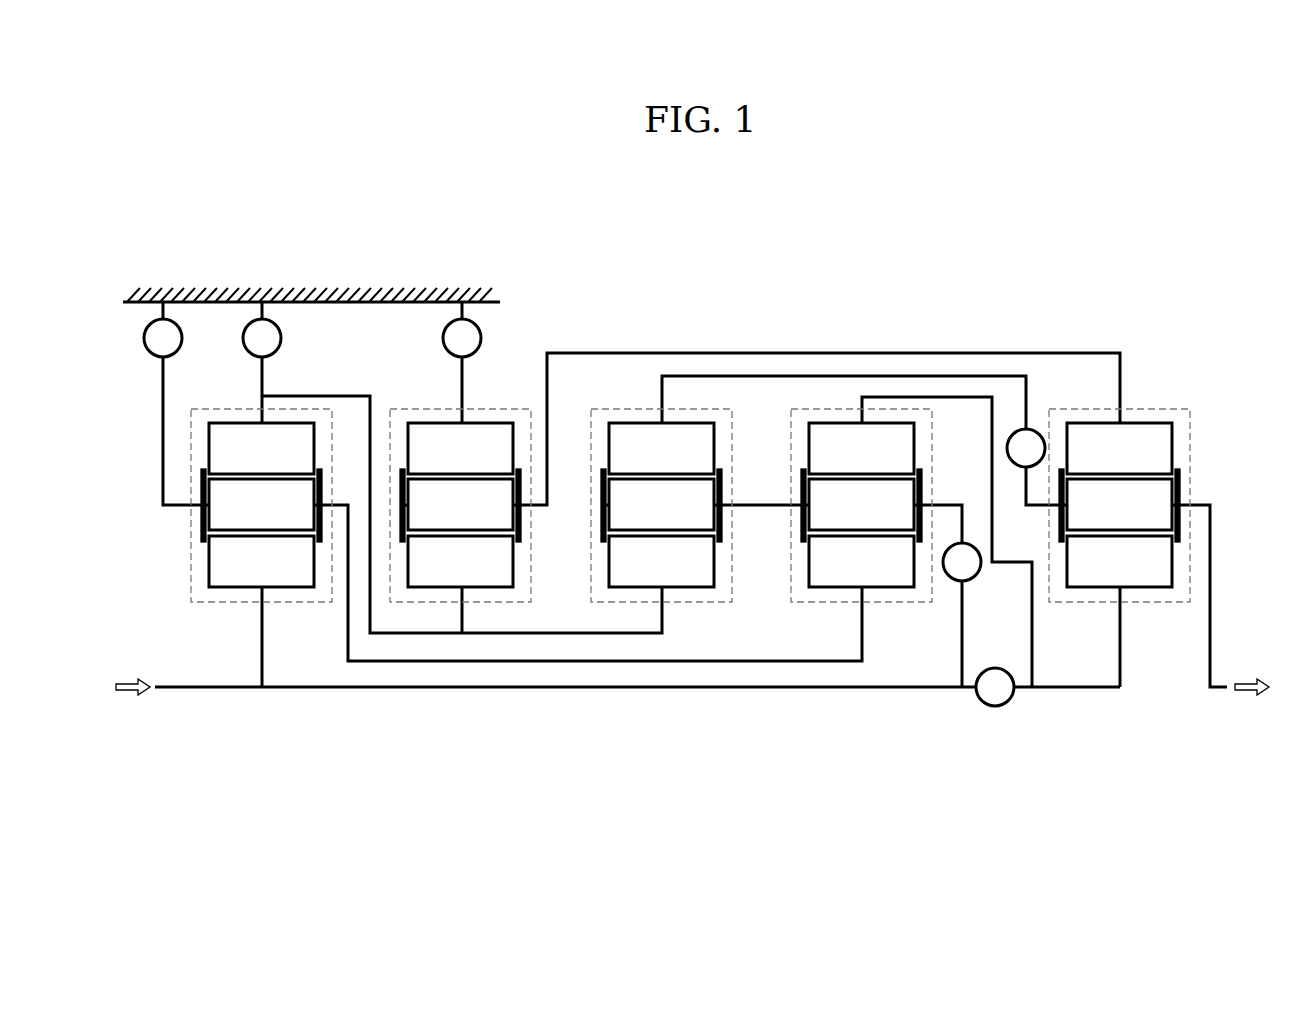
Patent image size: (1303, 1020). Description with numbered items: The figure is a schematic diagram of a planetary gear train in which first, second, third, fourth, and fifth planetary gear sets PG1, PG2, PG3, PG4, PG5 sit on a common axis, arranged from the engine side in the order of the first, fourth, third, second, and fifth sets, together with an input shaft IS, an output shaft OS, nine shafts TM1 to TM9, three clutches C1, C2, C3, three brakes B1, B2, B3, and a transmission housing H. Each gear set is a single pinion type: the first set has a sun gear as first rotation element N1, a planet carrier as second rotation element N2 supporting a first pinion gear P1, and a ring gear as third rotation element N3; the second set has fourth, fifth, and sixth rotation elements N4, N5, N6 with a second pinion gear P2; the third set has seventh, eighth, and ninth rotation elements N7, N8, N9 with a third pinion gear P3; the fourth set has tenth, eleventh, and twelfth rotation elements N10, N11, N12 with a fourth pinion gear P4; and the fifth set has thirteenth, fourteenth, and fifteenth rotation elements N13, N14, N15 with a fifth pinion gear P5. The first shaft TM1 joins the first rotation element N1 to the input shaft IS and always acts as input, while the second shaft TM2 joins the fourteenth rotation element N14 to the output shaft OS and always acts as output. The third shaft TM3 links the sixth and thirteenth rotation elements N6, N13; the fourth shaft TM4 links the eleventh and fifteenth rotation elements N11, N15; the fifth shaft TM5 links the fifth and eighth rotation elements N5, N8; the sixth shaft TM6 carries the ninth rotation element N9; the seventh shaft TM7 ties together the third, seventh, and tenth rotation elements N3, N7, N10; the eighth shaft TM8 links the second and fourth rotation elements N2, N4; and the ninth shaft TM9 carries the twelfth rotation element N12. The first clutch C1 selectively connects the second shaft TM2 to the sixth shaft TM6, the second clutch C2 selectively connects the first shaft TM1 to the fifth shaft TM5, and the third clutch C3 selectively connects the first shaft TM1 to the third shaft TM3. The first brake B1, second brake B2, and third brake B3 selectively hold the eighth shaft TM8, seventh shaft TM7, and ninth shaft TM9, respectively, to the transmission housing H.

The transmission housing H is at (332, 300).
The first brake B1 is at (173, 403).
The second brake B2 is at (262, 362).
The third brake B3 is at (462, 329).
The first clutch C1 is at (1026, 448).
The second clutch C2 is at (949, 596).
The third clutch C3 is at (1048, 646).
The first planetary gear set PG1 is at (232, 580).
The second planetary gear set PG2 is at (889, 580).
The third planetary gear set PG3 is at (689, 580).
The fourth planetary gear set PG4 is at (488, 581).
The fifth planetary gear set PG5 is at (1160, 582).
The first rotation element N1 is at (261, 561).
The second rotation element N2 is at (203, 525).
The third rotation element N3 is at (261, 448).
The fourth rotation element N4 is at (861, 561).
The fifth rotation element N5 is at (894, 474).
The sixth rotation element N6 is at (861, 448).
The seventh rotation element N7 is at (661, 561).
The eighth rotation element N8 is at (694, 474).
The ninth rotation element N9 is at (661, 448).
The tenth rotation element N10 is at (460, 561).
The eleventh rotation element N11 is at (523, 523).
The twelfth rotation element N12 is at (460, 448).
The thirteenth rotation element N13 is at (1119, 561).
The fourteenth rotation element N14 is at (1180, 483).
The fifteenth rotation element N15 is at (1119, 448).
The first pinion gear P1 is at (261, 504).
The second pinion gear P2 is at (861, 504).
The third pinion gear P3 is at (661, 504).
The fourth pinion gear P4 is at (460, 504).
The fifth pinion gear P5 is at (1119, 504).
The first shaft TM1 is at (539, 690).
The second shaft TM2 is at (1208, 655).
The third shaft TM3 is at (1034, 635).
The fourth shaft TM4 is at (683, 352).
The fifth shaft TM5 is at (758, 507).
The sixth shaft TM6 is at (764, 375).
The seventh shaft TM7 is at (403, 636).
The eighth shaft TM8 is at (618, 663).
The ninth shaft TM9 is at (464, 387).
The input shaft IS is at (174, 690).
The output shaft OS is at (1213, 680).